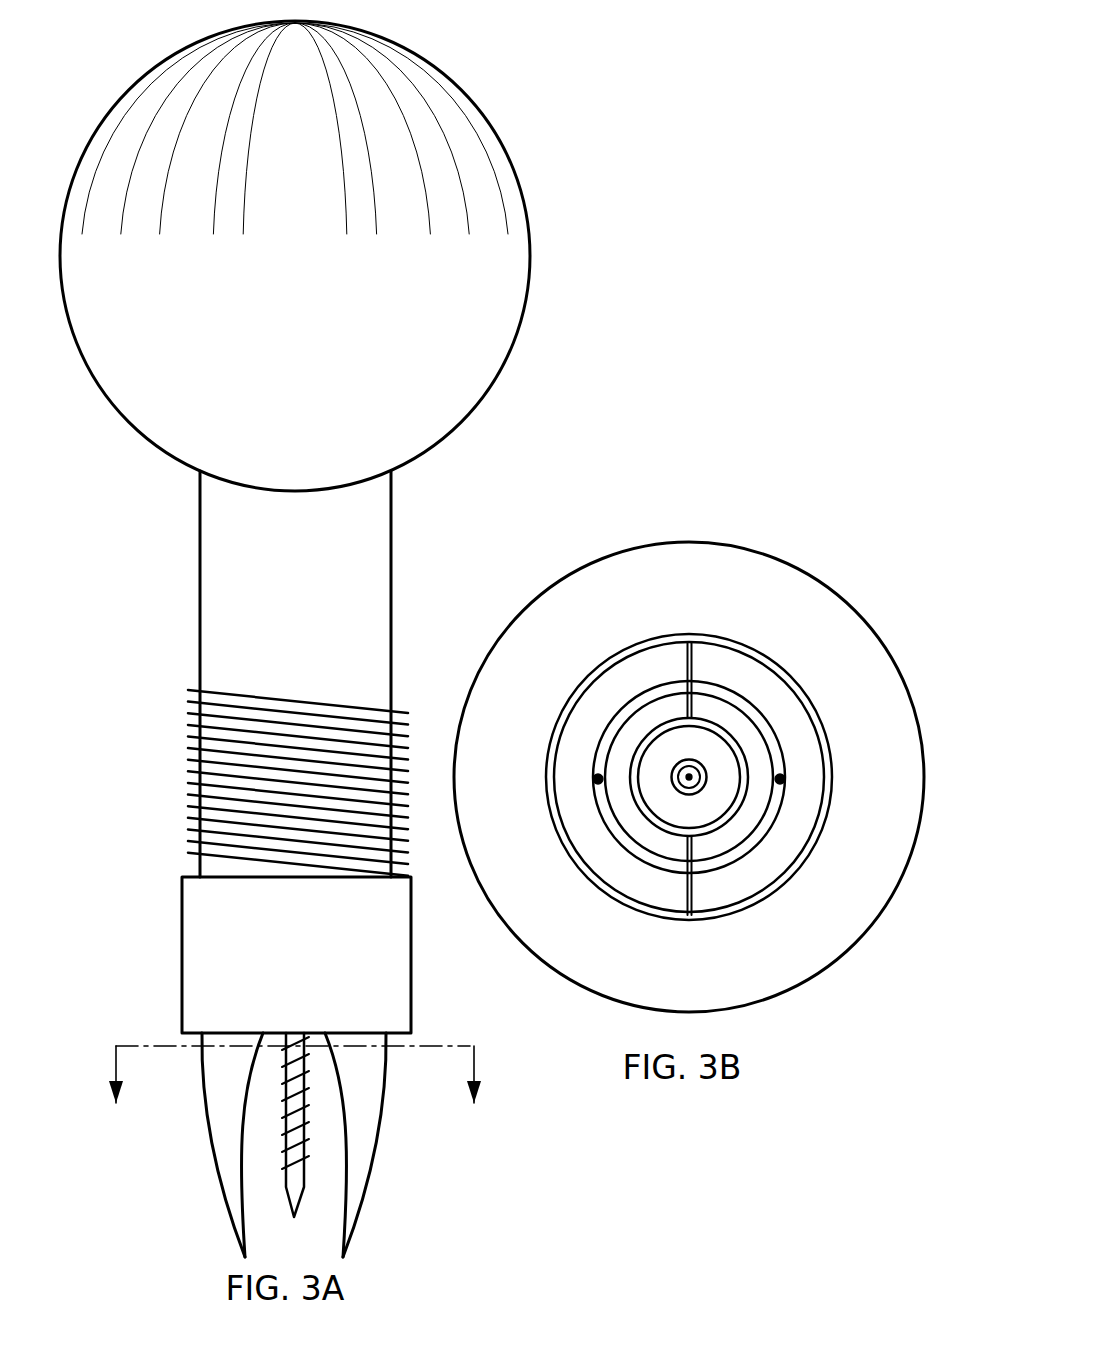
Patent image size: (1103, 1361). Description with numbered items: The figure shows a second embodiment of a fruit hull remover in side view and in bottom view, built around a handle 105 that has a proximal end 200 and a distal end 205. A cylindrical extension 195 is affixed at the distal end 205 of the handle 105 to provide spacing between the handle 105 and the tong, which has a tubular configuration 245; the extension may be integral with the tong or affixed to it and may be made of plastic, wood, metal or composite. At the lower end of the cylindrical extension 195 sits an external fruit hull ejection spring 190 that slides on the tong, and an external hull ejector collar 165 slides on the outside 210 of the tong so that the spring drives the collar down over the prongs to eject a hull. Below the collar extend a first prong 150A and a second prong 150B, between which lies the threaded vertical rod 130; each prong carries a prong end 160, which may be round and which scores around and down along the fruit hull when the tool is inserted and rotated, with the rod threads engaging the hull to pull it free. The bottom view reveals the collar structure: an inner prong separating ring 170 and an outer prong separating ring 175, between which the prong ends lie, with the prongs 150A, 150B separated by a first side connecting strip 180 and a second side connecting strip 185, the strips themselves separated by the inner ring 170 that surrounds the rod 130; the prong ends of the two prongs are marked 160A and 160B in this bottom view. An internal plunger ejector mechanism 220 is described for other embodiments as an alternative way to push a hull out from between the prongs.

In FIG. 3A, the proximal end 200 is at (301, 642).
In FIG. 3A, the handle 105 is at (295, 256).
In FIG. 3B, the handle 105 is at (845, 638).
In FIG. 3A, the cylindrical extension 195 is at (260, 515).
In FIG. 3A, the distal end 205 is at (305, 492).
In FIG. 3A, the internal plunger ejector mechanism 220 is at (200, 668).
In FIG. 3A, the tubular configuration 245 is at (295, 668).
In FIG. 3A, the external fruit hull ejection spring 190 is at (190, 723).
In FIG. 3A, the outside 210 is at (200, 869).
In FIG. 3A, the external hull ejector collar 165 is at (296, 955).
In FIG. 3B, the external hull ejector collar 165 is at (664, 634).
In FIG. 3A, the first of an at least one prong 150A is at (211, 1185).
In FIG. 3B, the first of an at least one prong 150A is at (611, 711).
In FIG. 3A, the second of an at least one prong 150B is at (375, 1185).
In FIG. 3B, the second of an at least one prong 150B is at (773, 813).
In FIG. 3A, the prong end 160 is at (345, 1262).
In FIG. 3A, the vertical rod 130 is at (287, 1168).
In FIG. 3B, the vertical rod 130 is at (697, 763).
In FIG. 3B, the inner prong separating ring 170 is at (710, 721).
In FIG. 3B, the outer prong separating ring 175 is at (807, 697).
In FIG. 3B, the first side connecting strip 180 is at (685, 662).
In FIG. 3B, the first prong tip 160A is at (592, 784).
In FIG. 3B, the second prong tip 160B is at (786, 784).
In FIG. 3B, the second side connecting strip 185 is at (688, 888).